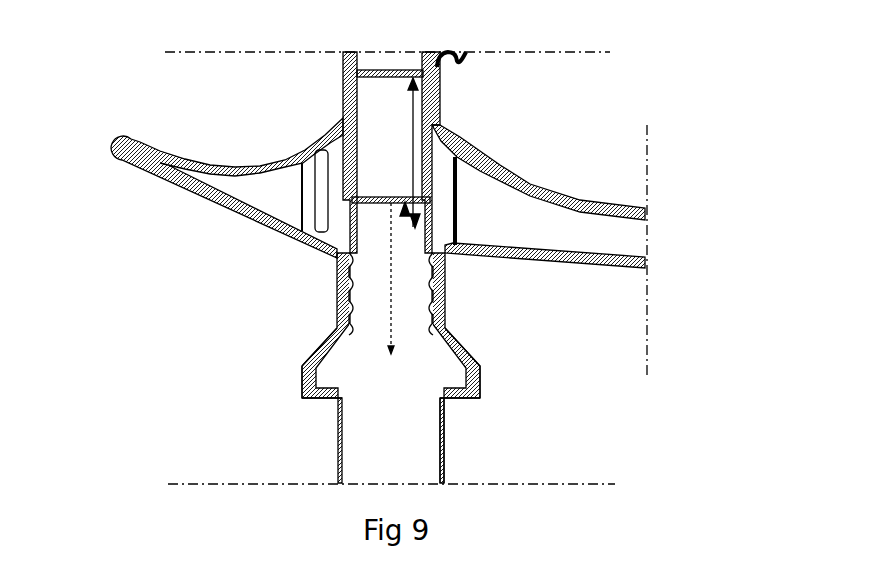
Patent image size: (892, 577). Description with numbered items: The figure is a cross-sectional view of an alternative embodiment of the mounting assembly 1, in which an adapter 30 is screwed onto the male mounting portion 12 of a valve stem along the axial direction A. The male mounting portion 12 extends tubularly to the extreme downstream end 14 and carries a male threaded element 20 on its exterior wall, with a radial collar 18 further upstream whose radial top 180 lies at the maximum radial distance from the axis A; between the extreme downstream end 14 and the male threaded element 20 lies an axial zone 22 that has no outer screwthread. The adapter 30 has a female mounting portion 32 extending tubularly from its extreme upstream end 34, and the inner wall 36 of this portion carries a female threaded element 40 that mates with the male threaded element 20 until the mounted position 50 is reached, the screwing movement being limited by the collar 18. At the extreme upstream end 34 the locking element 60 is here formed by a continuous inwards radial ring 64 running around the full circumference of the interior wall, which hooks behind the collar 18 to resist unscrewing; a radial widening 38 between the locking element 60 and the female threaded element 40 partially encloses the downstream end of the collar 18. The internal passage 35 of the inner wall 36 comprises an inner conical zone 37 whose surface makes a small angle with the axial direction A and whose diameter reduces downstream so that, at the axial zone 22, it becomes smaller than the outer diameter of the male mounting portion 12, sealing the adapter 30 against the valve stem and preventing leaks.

The mounting assembly 1 is at (573, 318).
The male mounting portion 12 is at (563, 358).
The extreme downstream end 14 is at (385, 183).
The radial collar 18 is at (478, 377).
The male threaded element 20 is at (446, 291).
The axial zone 22 is at (412, 217).
The adapter 30 is at (266, 332).
The female mounting portion 32 is at (316, 296).
The extreme upstream end 34 is at (398, 412).
The internal passage 35 is at (367, 68).
The inner wall 36 is at (372, 98).
The inner conical zone 37 is at (415, 141).
The radial widening 38 is at (300, 366).
The female threaded element 40 is at (433, 277).
The mounted position 50 is at (285, 400).
The locking element 60 is at (473, 415).
The inwards radial ring 64 is at (331, 400).
The radial top 180 is at (467, 387).
The axial direction A is at (417, 222).